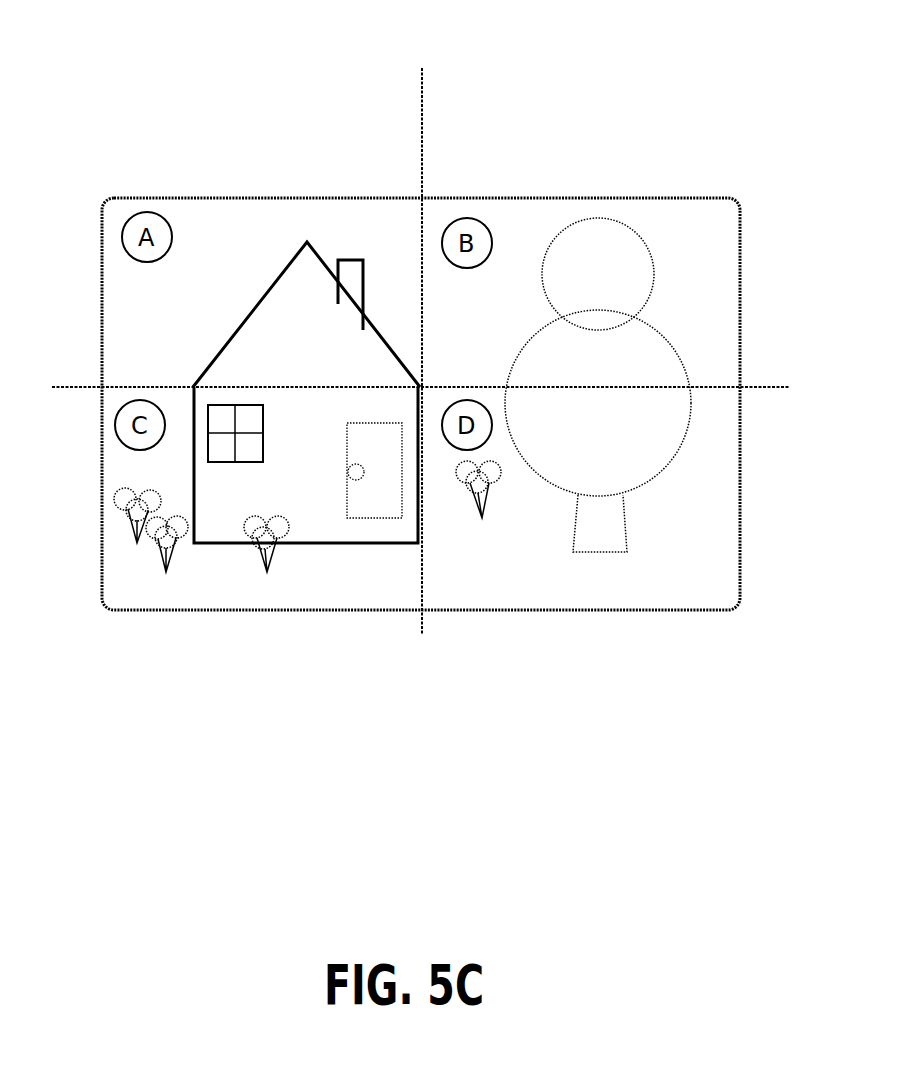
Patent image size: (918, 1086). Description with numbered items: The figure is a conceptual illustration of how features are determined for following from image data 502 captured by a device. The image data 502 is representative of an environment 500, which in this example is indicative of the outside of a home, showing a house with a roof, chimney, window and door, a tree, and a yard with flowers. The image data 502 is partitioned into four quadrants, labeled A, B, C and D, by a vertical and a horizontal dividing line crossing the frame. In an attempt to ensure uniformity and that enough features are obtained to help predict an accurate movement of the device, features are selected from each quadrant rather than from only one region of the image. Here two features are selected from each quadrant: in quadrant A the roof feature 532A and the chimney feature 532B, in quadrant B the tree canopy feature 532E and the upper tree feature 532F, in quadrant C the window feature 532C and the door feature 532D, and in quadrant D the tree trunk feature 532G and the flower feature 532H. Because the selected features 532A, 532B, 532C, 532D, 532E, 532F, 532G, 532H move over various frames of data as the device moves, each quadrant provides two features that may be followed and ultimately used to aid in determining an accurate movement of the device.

The environment 500 is at (377, 60).
The image data 502 is at (737, 198).
The feature selected from quadrant A 532A is at (250, 315).
The feature selected from quadrant A 532B is at (364, 287).
The feature selected from quadrant C 532C is at (263, 433).
The feature selected from quadrant C 532D is at (348, 468).
The feature selected from quadrant B 532E is at (682, 352).
The feature selected from quadrant B 532F is at (650, 248).
The feature selected from quadrant D 532G is at (667, 508).
The feature selected from quadrant D 532H is at (518, 497).